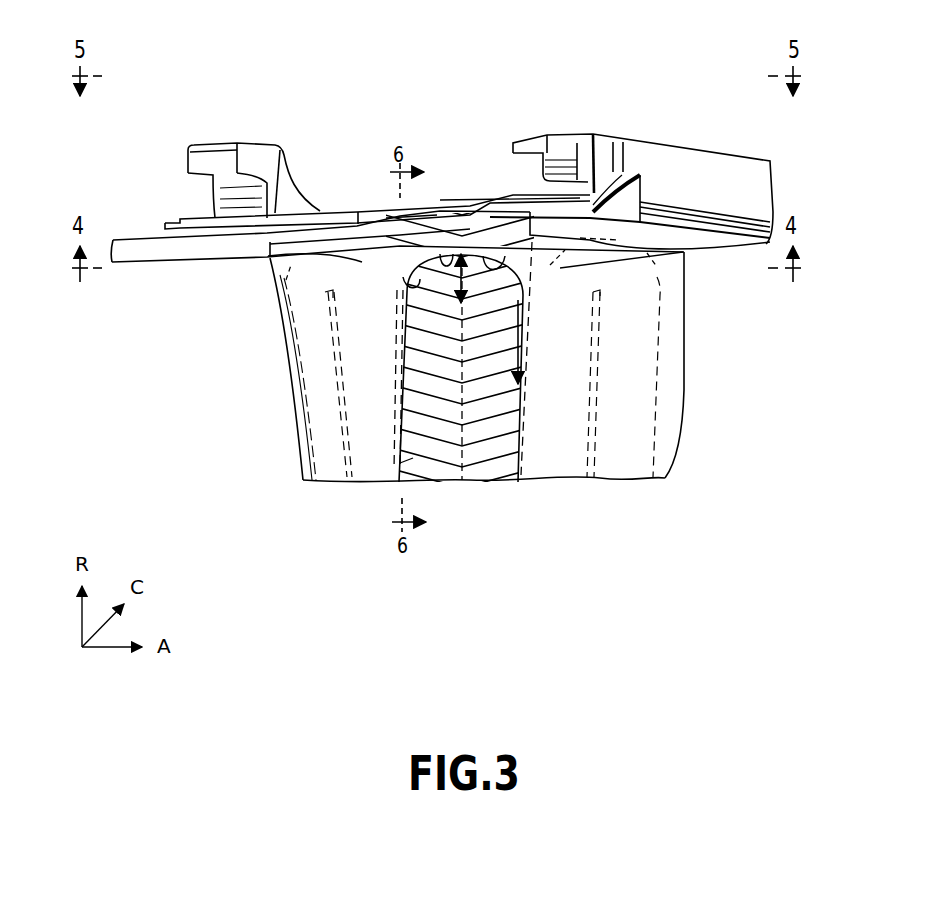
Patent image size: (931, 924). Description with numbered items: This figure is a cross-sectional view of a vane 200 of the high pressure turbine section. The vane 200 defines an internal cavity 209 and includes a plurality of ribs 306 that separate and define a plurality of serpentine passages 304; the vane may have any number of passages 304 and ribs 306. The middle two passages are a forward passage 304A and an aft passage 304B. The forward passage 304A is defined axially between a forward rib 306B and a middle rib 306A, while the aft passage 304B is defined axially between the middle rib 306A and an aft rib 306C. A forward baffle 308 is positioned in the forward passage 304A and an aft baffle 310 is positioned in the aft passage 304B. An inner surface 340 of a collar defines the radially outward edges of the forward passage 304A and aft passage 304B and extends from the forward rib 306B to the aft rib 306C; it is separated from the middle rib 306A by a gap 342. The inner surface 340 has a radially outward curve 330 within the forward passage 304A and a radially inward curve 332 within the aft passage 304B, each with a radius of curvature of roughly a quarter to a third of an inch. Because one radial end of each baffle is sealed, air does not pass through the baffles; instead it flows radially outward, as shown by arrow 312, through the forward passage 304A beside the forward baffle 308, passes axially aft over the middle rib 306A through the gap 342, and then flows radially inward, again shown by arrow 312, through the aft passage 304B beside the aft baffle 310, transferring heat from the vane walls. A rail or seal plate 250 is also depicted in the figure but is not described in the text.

The vane 200 is at (268, 254).
The internal cavity 209 is at (663, 420).
The rail / seal plate 250 is at (723, 240).
The passages 304 is at (320, 401).
The forward passage 304A is at (410, 465).
The aft passage 304B is at (490, 460).
The ribs 306 is at (343, 450).
The middle rib 306A is at (462, 445).
The forward rib 306B is at (423, 350).
The aft rib 306C is at (597, 277).
The forward baffle 308 is at (410, 343).
The aft baffle 310 is at (510, 420).
The arrow 312 is at (407, 400).
The radially outward curve 330 is at (455, 252).
The radially inward curve 332 is at (518, 300).
The inner surface 340 is at (415, 285).
The gap 342 is at (478, 290).